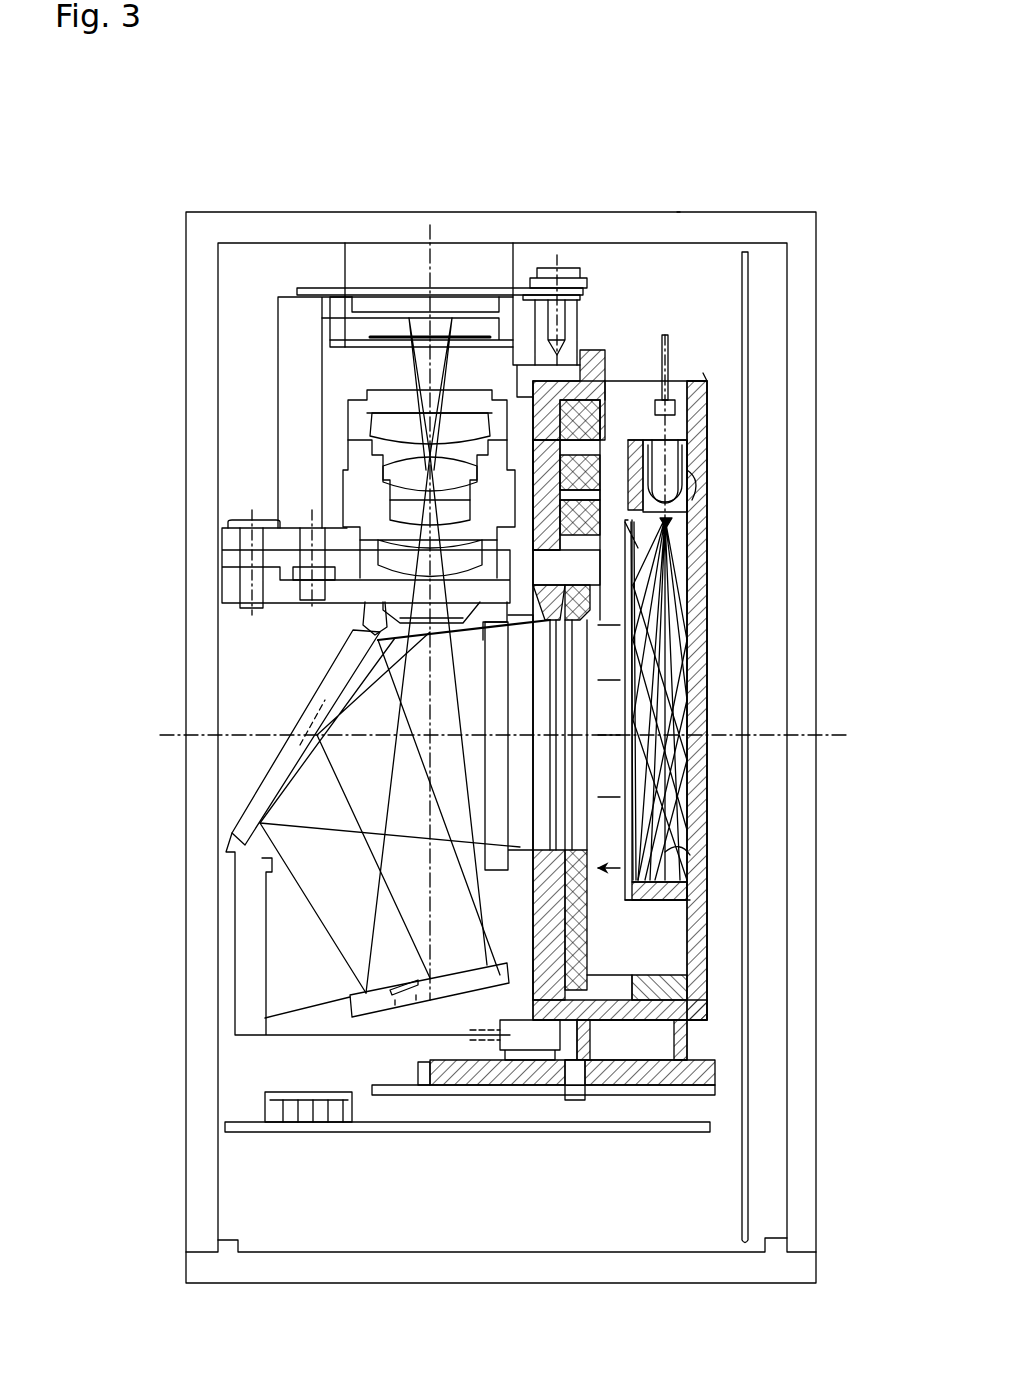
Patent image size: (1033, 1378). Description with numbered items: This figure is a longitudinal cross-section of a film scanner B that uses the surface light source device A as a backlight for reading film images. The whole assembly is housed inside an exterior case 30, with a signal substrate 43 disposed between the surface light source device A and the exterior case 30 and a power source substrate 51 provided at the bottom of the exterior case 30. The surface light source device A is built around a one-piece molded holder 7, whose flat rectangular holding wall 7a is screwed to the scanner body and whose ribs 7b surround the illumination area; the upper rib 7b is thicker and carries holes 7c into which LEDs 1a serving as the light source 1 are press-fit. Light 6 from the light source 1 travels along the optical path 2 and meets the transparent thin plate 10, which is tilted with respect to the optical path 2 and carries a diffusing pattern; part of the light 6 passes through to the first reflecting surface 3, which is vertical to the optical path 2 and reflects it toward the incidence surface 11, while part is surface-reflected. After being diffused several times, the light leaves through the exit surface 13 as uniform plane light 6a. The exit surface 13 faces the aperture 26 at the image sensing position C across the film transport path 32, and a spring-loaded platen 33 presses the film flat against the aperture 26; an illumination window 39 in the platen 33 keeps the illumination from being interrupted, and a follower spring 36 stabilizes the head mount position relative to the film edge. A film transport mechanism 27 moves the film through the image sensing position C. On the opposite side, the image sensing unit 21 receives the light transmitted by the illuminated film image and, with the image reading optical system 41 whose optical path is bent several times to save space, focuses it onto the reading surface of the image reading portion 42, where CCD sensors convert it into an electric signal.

The light source 1 is at (700, 378).
The LEDs 1a is at (700, 432).
The optical path 2 is at (580, 690).
The first reflecting surface 3 is at (660, 858).
The light 6 is at (690, 600).
The uniform plane light 6a is at (615, 797).
The holder 7 is at (722, 792).
The holding wall 7a is at (706, 690).
The ribs 7b is at (645, 400).
The holes 7c is at (692, 485).
The transparent thin plate 10 is at (655, 742).
The incidence surface 11 is at (675, 550).
The exit surface 13 is at (620, 868).
The image sensing unit 21 is at (262, 492).
The aperture 26 is at (530, 855).
The film transport mechanism 27 is at (652, 1095).
The exterior case 30 is at (264, 228).
The film transport path 32 is at (560, 770).
The platen 33 is at (620, 985).
The follower spring 36 is at (595, 410).
The illumination window 39 is at (490, 963).
The image reading optical system 41 is at (248, 770).
The image reading portion 42 is at (528, 260).
The signal substrate 43 is at (748, 1178).
The power source substrate 51 is at (428, 1132).
The surface light source device A is at (705, 373).
The film scanner B is at (678, 210).
The image sensing position C is at (470, 703).